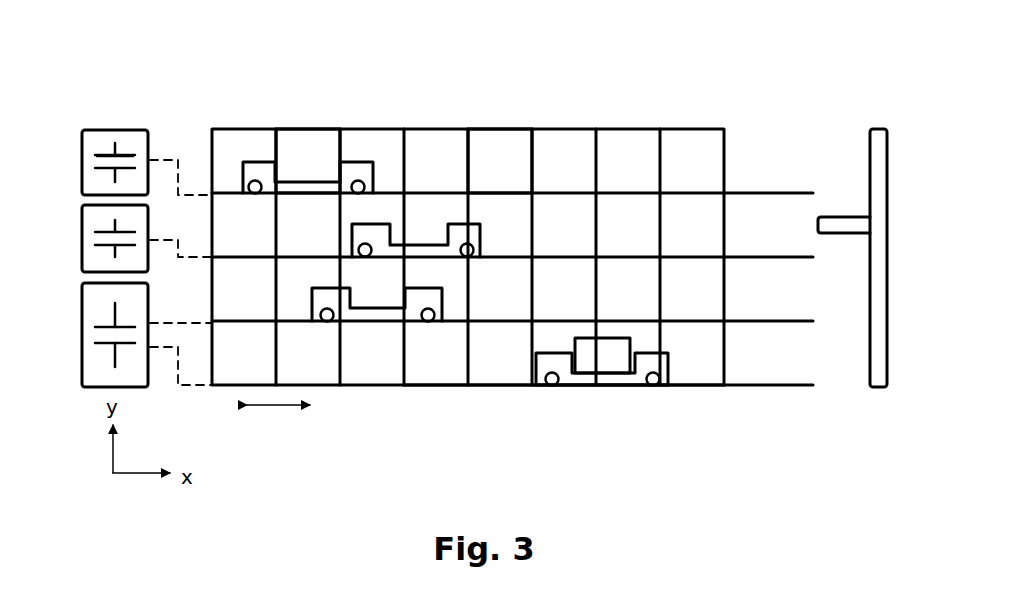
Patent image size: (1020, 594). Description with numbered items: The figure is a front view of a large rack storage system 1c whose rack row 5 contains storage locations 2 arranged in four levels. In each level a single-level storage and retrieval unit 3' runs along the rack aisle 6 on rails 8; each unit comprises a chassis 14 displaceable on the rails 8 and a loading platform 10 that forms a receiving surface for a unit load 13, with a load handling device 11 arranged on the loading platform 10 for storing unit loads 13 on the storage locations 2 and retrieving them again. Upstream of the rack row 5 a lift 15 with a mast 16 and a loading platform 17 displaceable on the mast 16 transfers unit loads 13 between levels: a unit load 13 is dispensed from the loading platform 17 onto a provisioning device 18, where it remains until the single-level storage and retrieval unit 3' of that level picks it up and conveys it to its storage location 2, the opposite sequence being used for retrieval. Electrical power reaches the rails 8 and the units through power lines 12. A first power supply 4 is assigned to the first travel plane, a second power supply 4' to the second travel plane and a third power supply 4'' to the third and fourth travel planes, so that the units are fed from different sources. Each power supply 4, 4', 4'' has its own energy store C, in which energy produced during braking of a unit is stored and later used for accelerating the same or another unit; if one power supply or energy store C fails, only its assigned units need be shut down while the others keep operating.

The rack storage system 1c is at (822, 98).
The storage location 2 is at (498, 157).
The single-level storage and retrieval unit 3' is at (578, 411).
The first power supply 4 is at (137, 138).
The second power supply 4' is at (127, 238).
The third power supply 4'' is at (126, 335).
The energy store C is at (120, 153).
The rack row 5 is at (282, 152).
The rack aisle 6 is at (278, 424).
The rails 8 is at (450, 387).
The loading platform 10 is at (307, 180).
The load handling device 11 is at (307, 134).
The power lines 12 is at (234, 129).
The unit load 13 is at (617, 358).
The chassis 14 is at (608, 378).
The lift 15 is at (889, 258).
The mast 16 is at (875, 297).
The loading platform 17 is at (863, 213).
The provisioning device 18 is at (760, 194).